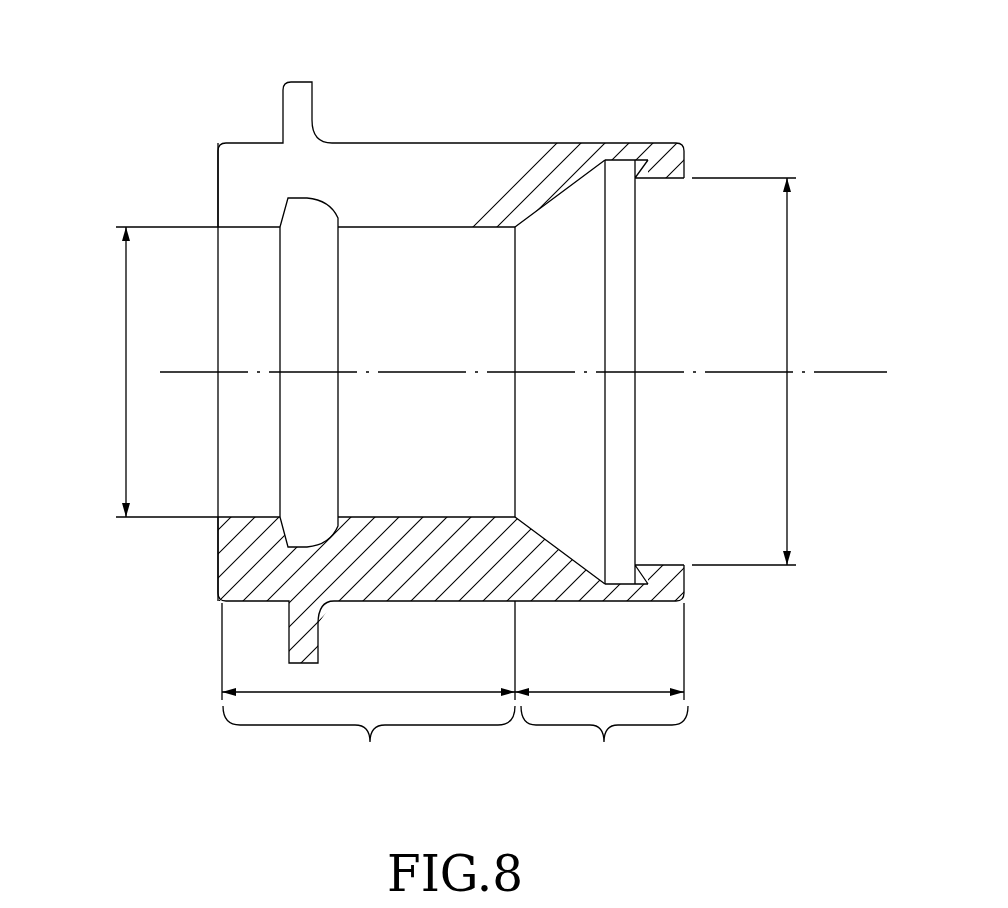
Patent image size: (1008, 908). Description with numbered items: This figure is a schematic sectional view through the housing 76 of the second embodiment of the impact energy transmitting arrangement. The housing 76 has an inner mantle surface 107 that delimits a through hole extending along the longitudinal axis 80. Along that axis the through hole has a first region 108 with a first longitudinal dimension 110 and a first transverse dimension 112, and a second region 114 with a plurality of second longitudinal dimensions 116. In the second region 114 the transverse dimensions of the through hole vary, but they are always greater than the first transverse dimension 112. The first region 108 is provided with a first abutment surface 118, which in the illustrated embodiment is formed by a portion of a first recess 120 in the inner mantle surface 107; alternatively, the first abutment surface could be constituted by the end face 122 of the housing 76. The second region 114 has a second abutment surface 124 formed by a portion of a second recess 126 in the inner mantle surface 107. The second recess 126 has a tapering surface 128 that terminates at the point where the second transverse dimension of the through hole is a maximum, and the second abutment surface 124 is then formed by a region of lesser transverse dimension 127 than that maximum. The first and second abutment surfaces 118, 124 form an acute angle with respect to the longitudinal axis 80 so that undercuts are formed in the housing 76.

The housing 76 is at (164, 72).
The longitudinal axis 80 is at (858, 369).
The inner mantle surface 107 is at (436, 324).
The first region 108 is at (369, 742).
The first longitudinal dimension 110 is at (368, 650).
The first transverse dimension 112 is at (124, 452).
The second region 114 is at (604, 742).
The second longitudinal dimensions 116 is at (599, 651).
The first abutment surface 118 is at (326, 205).
The first recess 120 is at (297, 325).
The end face 122 is at (216, 197).
The second abutment surface 124 is at (638, 168).
The second recess 126 is at (575, 488).
The lesser transverse dimension 127 is at (788, 403).
The tapering surface 128 is at (558, 185).